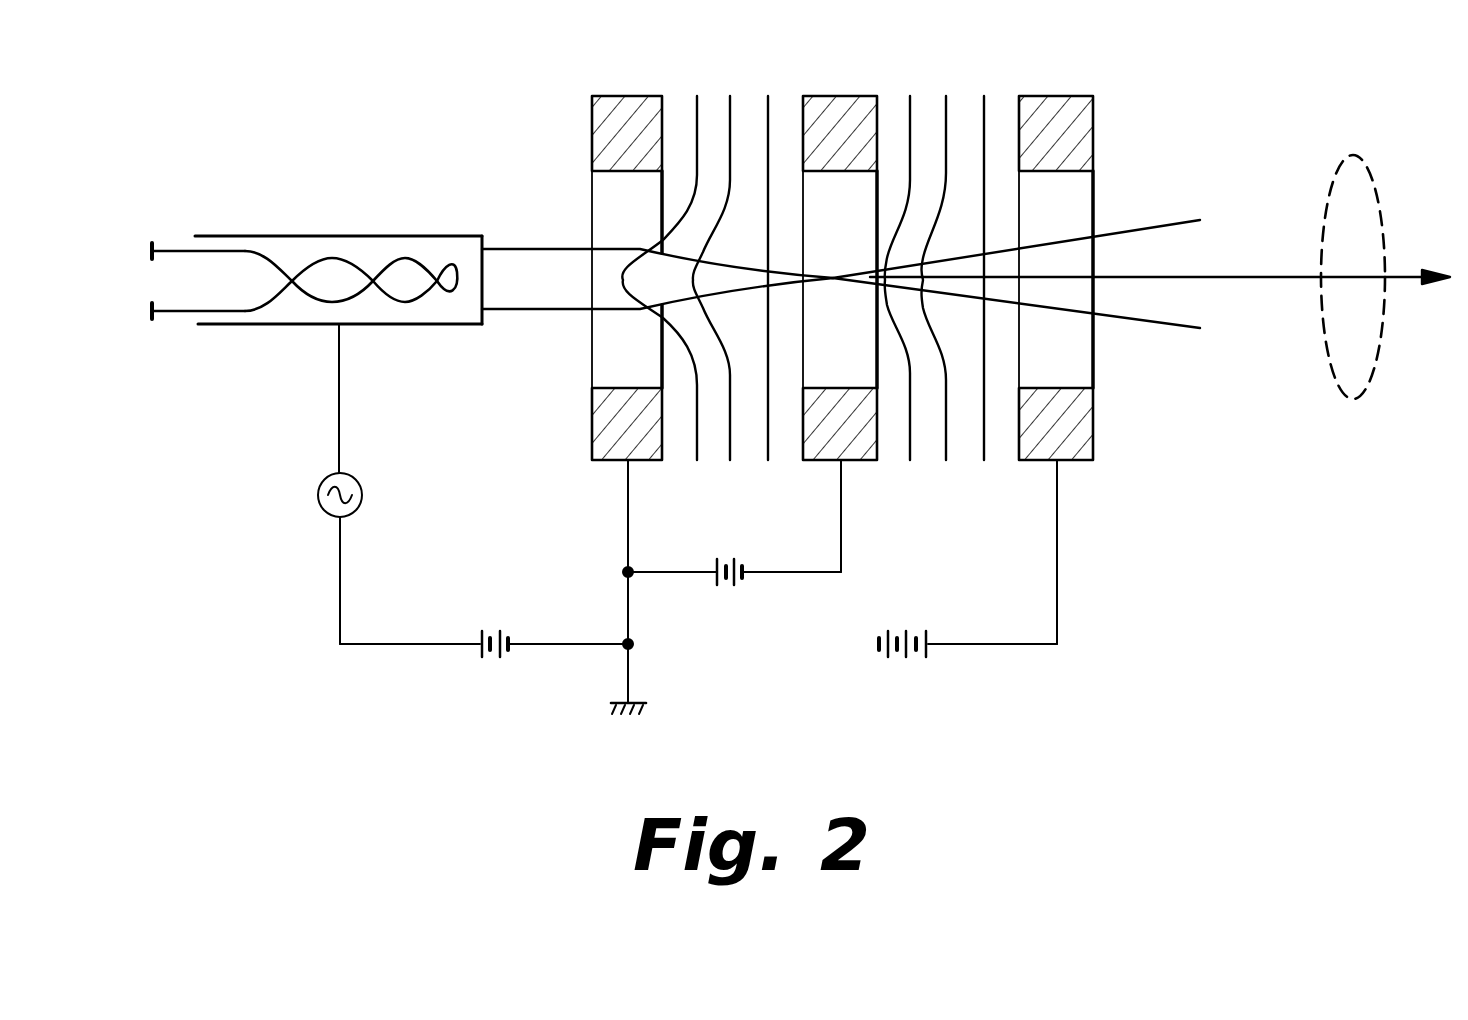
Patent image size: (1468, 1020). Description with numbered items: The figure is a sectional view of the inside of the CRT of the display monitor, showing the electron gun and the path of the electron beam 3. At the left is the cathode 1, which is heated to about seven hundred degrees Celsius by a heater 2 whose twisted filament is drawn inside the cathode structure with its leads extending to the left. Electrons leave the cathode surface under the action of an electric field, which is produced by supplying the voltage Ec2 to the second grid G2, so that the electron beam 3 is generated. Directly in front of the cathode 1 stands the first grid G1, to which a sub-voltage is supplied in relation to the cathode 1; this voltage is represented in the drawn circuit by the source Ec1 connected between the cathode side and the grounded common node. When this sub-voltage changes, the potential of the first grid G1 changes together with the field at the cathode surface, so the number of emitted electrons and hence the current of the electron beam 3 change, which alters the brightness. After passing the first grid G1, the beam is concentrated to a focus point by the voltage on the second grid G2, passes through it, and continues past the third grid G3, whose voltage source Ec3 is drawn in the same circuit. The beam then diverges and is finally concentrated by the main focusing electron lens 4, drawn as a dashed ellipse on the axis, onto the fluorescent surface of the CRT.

The cathode 1 is at (421, 236).
The heater 2 is at (175, 316).
The electron beam 3 is at (1155, 228).
The main focusing electron lens 4 is at (1363, 198).
The first grid G1 is at (663, 242).
The second grid G2 is at (882, 239).
The third grid G3 is at (1090, 236).
The first grid voltage source Ec1 is at (495, 627).
The second grid voltage Ec2 is at (735, 554).
The third grid voltage source Ec3 is at (903, 623).